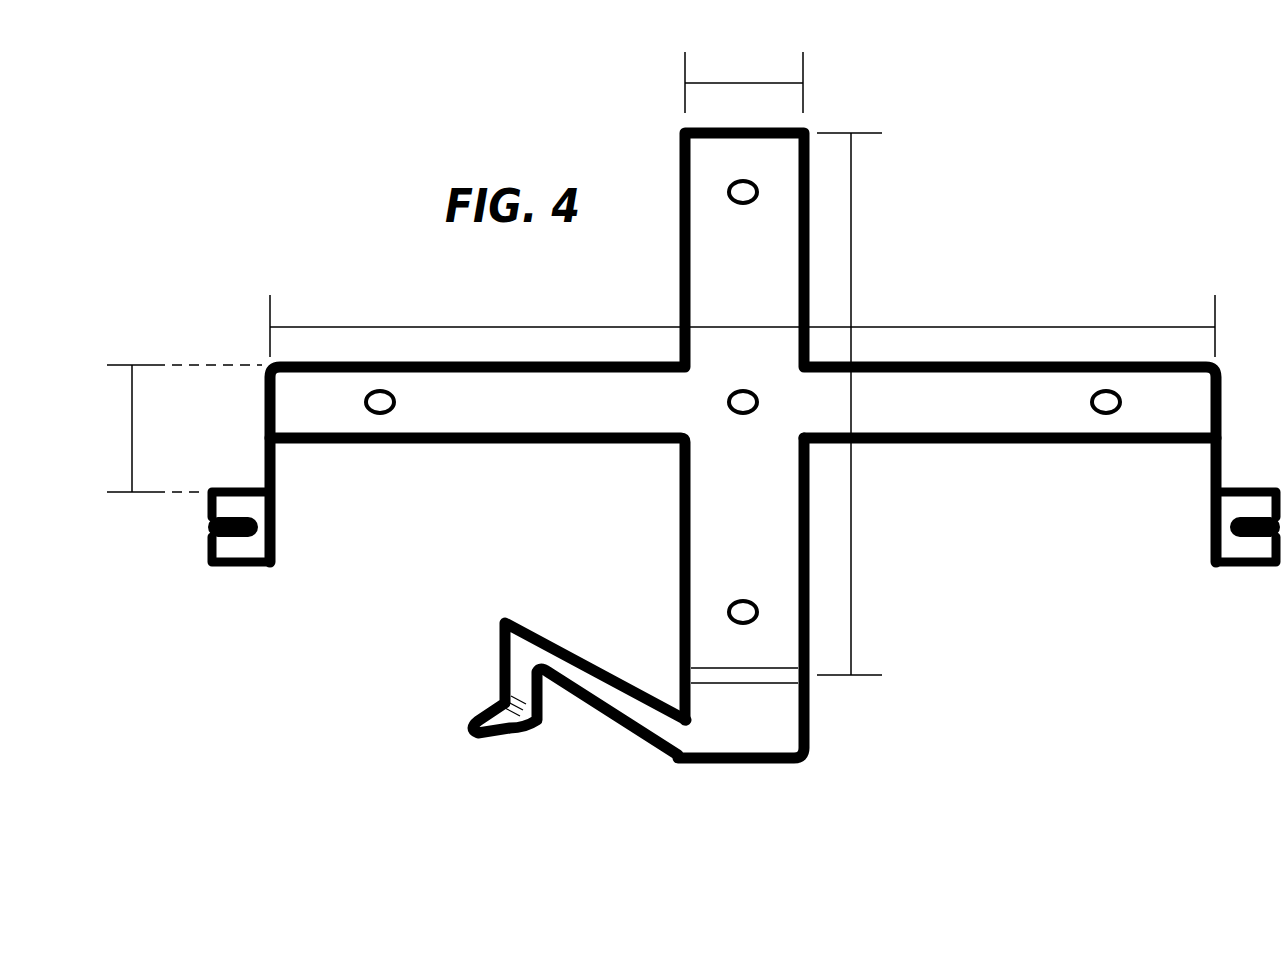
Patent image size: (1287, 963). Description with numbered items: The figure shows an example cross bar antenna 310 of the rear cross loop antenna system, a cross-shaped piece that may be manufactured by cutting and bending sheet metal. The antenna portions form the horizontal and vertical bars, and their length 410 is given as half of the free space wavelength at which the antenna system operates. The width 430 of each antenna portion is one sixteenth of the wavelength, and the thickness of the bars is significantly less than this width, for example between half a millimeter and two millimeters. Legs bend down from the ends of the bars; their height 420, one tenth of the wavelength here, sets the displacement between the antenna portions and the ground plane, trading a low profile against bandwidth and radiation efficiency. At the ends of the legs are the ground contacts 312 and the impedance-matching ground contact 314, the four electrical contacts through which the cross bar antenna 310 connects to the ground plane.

The cross bar antenna 310 is at (583, 511).
The ground contact 312 is at (233, 548).
The impedance-matching ground contact 314 is at (500, 712).
The length 410 is at (851, 262).
The height 420 is at (132, 452).
The width 430 is at (776, 83).